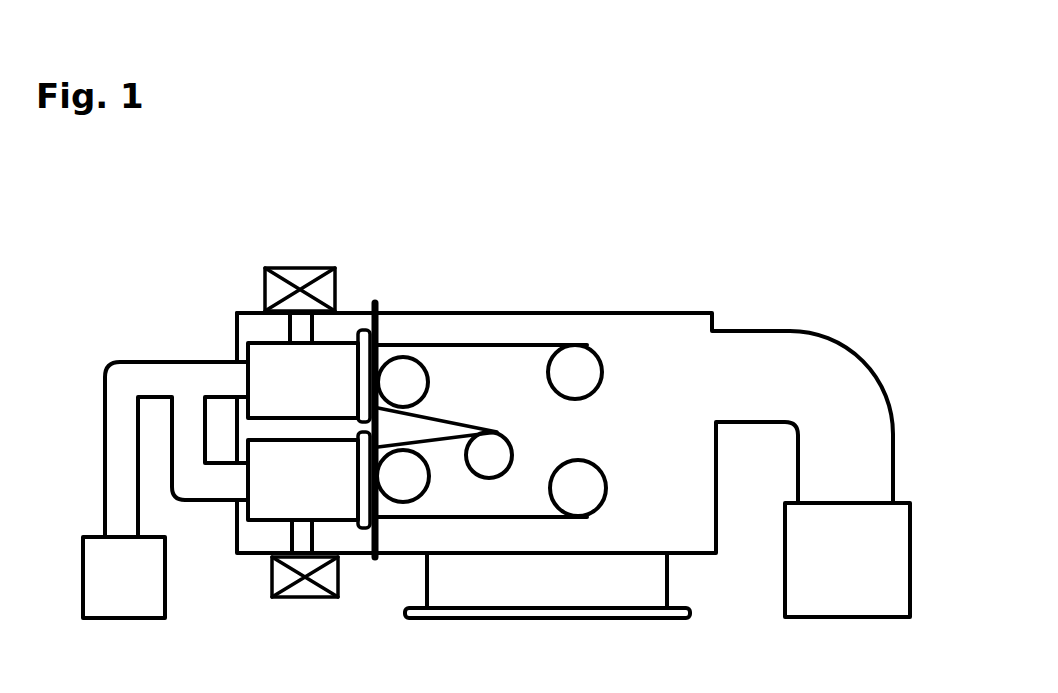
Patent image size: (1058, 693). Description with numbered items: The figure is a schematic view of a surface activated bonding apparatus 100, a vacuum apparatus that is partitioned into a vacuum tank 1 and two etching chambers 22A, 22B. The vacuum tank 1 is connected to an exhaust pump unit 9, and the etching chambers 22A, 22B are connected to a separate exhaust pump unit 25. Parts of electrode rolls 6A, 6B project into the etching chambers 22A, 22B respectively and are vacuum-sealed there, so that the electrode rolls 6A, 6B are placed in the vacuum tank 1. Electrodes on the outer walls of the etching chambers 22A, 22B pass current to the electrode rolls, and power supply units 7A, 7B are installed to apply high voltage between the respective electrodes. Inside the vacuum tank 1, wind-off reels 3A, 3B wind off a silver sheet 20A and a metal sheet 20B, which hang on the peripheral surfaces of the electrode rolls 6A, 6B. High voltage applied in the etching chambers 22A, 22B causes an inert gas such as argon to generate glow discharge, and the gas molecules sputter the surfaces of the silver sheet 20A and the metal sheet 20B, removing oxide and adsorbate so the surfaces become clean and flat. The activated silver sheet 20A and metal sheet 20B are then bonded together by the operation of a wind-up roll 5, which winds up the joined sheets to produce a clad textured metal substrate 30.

The surface activated bonding apparatus 100 is at (775, 188).
The vacuum tank 1 is at (677, 376).
The exhaust pump unit 25 is at (125, 608).
The etching chamber 22A is at (266, 357).
The etching chamber 22B is at (262, 512).
The power supply unit 7A is at (314, 280).
The power supply unit 7B is at (300, 588).
The electrode roll 6A is at (402, 358).
The electrode roll 6B is at (398, 502).
The silver sheet 20A is at (477, 345).
The metal sheet 20B is at (490, 520).
The wind-off reel 3A is at (592, 360).
The wind-off reel 3B is at (592, 490).
The wind-up roll 5 is at (507, 455).
The clad textured metal substrate 30 is at (500, 430).
The exhaust pump unit 9 is at (868, 592).